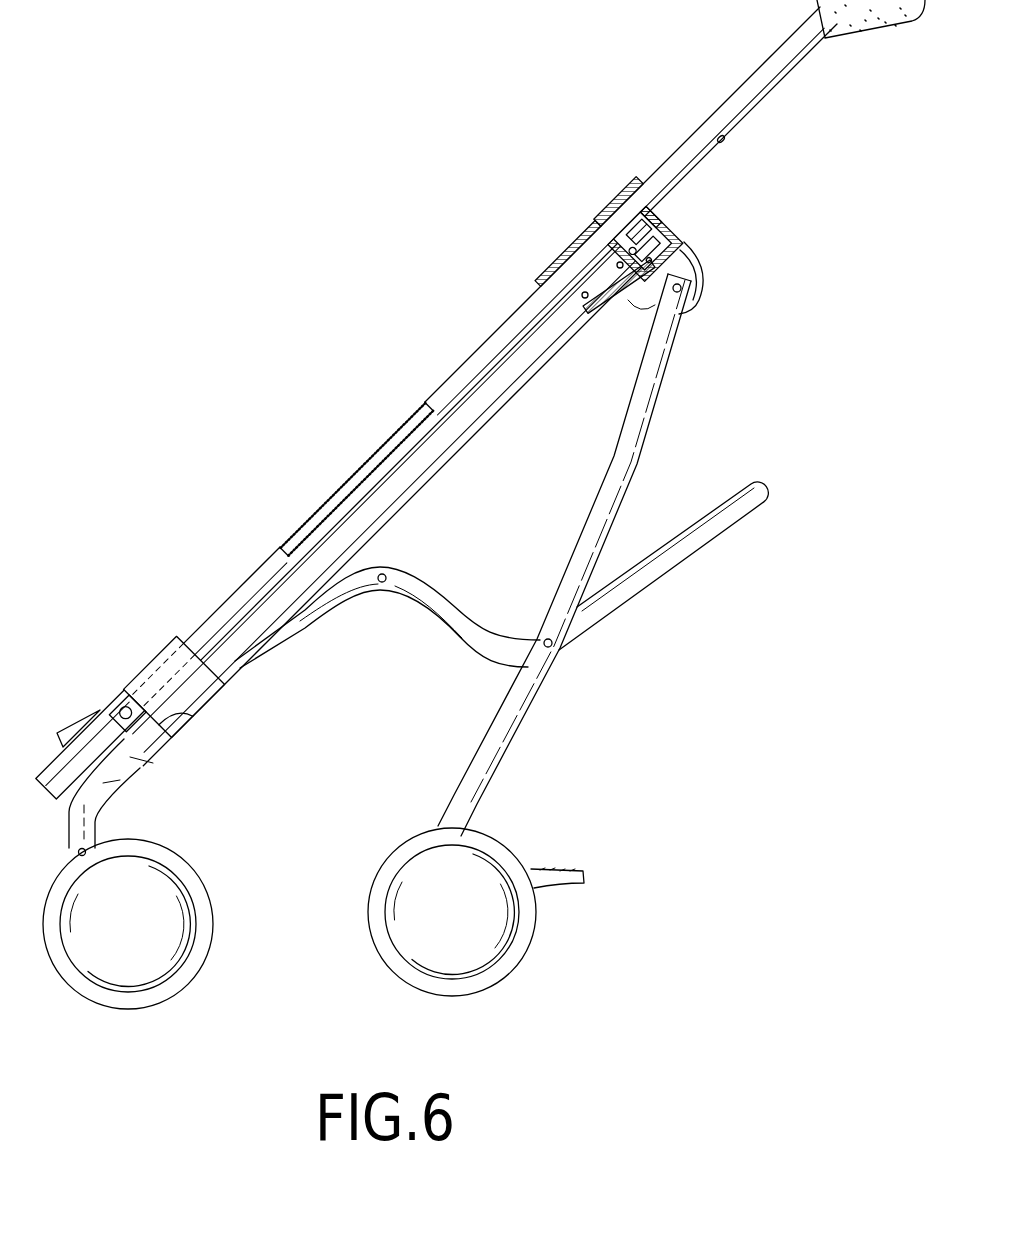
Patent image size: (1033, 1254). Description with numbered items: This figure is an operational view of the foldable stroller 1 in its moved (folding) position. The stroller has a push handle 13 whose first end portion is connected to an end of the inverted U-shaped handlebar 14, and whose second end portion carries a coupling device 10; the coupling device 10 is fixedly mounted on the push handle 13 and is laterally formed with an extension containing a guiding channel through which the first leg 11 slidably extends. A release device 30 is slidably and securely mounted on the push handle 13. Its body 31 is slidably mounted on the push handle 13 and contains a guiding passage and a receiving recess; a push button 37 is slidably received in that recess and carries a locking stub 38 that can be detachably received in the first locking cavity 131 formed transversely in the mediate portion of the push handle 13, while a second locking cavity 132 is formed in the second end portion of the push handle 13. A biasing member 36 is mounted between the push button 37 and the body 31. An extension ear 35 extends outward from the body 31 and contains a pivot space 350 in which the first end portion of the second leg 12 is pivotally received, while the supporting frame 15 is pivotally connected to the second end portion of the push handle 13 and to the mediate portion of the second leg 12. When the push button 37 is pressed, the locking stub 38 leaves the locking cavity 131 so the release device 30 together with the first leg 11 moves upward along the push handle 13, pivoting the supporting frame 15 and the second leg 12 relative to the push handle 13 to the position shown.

The foldable stroller 1 is at (388, 184).
The coupling device 10 is at (140, 666).
The first leg 11 is at (394, 504).
The second leg 12 is at (643, 446).
The push handle 13 is at (456, 368).
The handlebar 14 is at (875, 26).
The supporting frame 15 is at (730, 528).
The release device 30 is at (575, 209).
The body 31 is at (552, 265).
The extension ear 35 is at (701, 283).
The biasing member 36 is at (690, 252).
The push button 37 is at (601, 186).
The locking stub 38 is at (656, 212).
The first locking cavity 131 is at (374, 470).
The second locking cavity 132 is at (723, 141).
The pivot space 350 is at (642, 288).